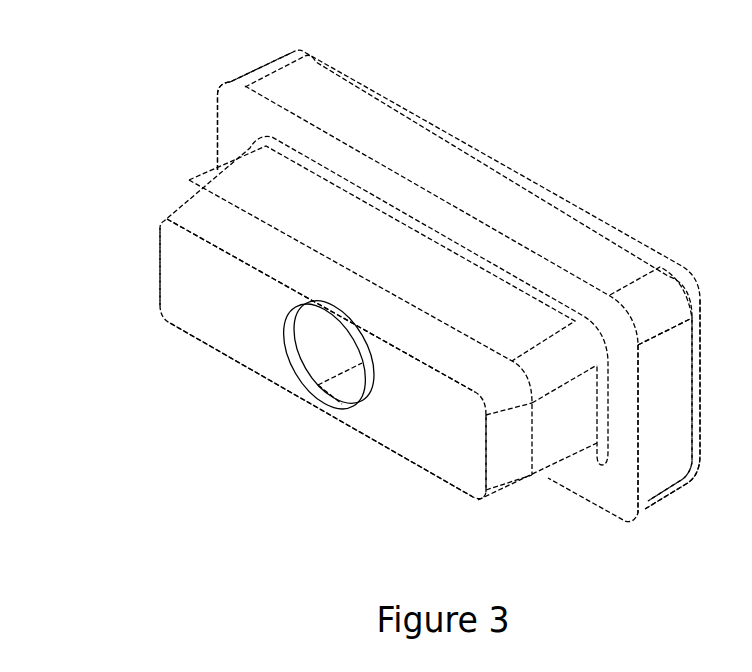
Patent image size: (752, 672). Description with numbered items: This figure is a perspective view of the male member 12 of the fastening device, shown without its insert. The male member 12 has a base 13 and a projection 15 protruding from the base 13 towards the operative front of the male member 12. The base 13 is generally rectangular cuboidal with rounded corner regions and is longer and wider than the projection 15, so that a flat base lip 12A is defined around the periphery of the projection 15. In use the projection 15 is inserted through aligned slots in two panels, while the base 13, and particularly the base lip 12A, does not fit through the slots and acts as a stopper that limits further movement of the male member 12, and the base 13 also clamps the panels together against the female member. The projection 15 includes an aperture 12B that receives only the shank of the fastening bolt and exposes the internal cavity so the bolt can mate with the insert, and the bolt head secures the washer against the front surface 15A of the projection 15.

The male member 12 is at (146, 71).
The base lip 12A is at (227, 118).
The aperture 12B is at (344, 363).
The base 13 is at (581, 235).
The projection 15 is at (202, 258).
The front surface 15A is at (378, 428).